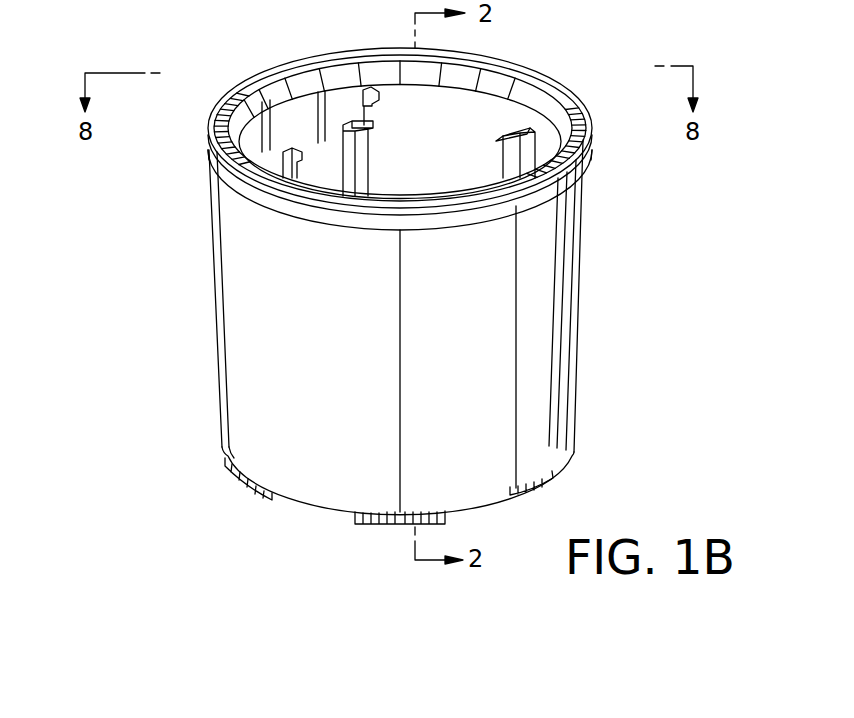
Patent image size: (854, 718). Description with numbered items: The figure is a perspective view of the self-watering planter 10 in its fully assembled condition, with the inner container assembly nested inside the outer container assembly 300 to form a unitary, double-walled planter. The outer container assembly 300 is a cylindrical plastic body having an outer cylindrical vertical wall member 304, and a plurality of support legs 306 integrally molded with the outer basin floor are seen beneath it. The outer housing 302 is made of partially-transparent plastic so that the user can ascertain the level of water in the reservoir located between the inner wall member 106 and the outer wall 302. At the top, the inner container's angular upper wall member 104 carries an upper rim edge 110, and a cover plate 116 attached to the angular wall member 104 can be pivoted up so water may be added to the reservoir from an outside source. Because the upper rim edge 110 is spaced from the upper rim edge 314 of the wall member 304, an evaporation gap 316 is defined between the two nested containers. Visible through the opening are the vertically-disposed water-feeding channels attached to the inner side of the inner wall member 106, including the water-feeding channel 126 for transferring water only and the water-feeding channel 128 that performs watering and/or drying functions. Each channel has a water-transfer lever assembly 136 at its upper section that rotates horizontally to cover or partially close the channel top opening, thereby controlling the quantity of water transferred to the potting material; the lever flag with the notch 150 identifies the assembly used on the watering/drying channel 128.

The self-watering planter 10 is at (78, 389).
The angular upper wall member 104 is at (252, 108).
The inner wall member 106 is at (293, 125).
The upper rim edge 110 is at (518, 72).
The cover plate 116 is at (503, 190).
The water-feeding channel 126 is at (362, 168).
The water-feeding channel 128 is at (507, 171).
The water-transfer lever assembly 136 is at (377, 100).
The notch 150 is at (515, 150).
The outer container assembly 300 is at (727, 316).
The outer wall 302 is at (592, 257).
The outer cylindrical vertical wall member 304 is at (270, 325).
The support legs 306 is at (240, 476).
The upper rim edge 314 is at (328, 227).
The evaporation gap 316 is at (561, 177).